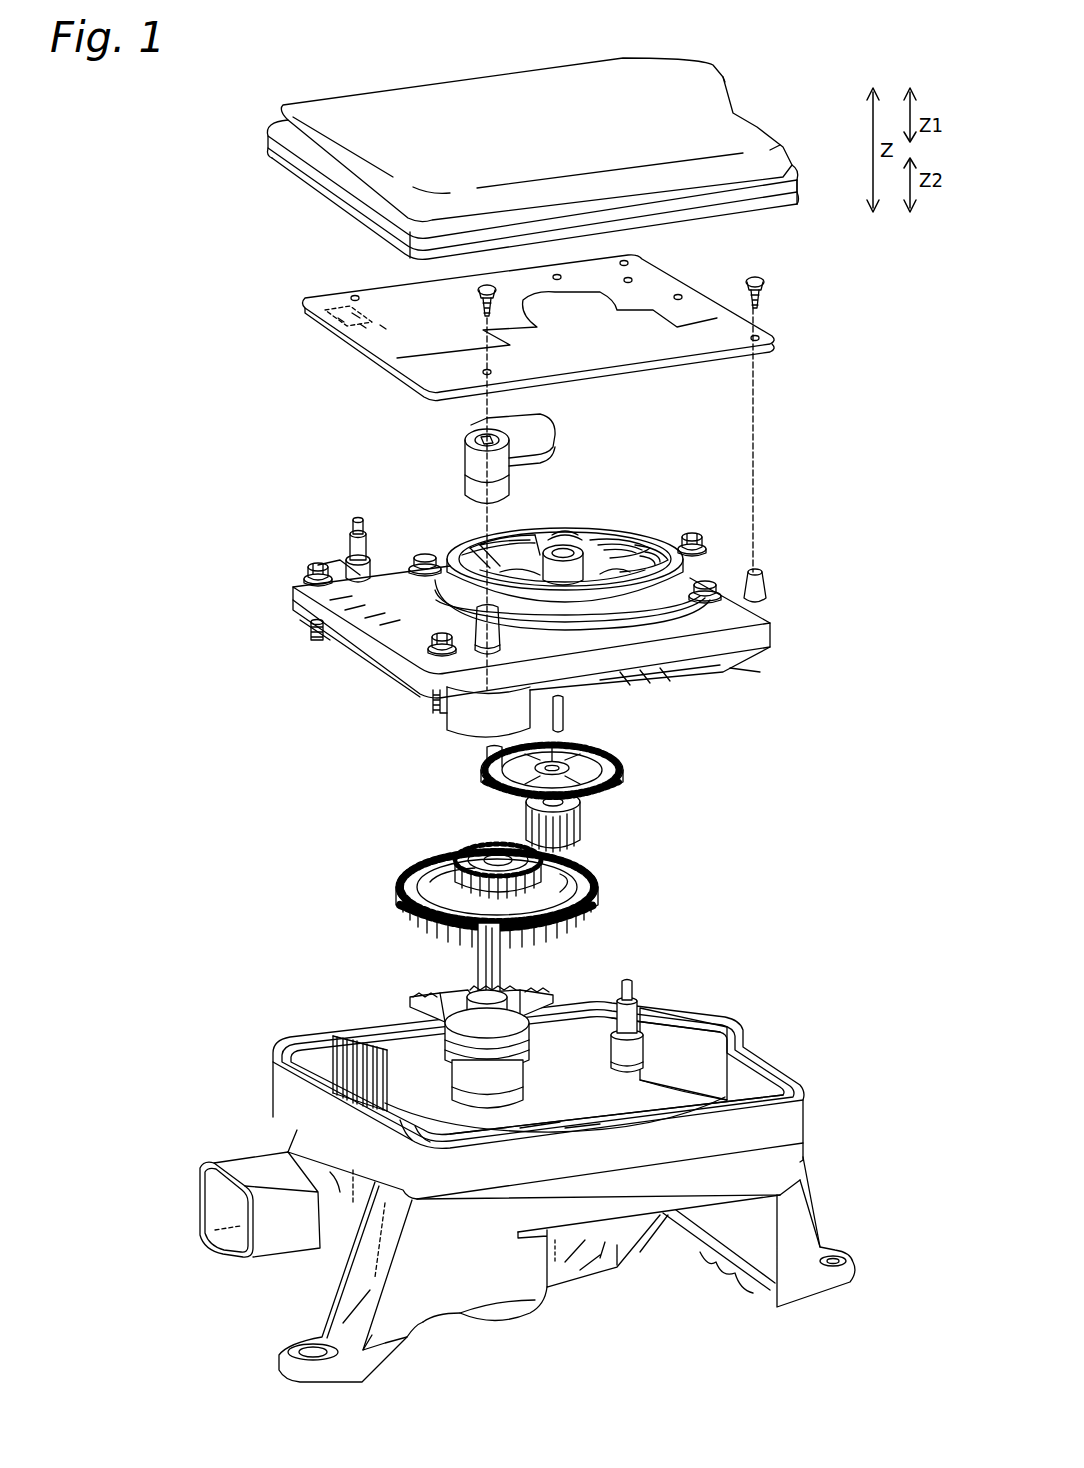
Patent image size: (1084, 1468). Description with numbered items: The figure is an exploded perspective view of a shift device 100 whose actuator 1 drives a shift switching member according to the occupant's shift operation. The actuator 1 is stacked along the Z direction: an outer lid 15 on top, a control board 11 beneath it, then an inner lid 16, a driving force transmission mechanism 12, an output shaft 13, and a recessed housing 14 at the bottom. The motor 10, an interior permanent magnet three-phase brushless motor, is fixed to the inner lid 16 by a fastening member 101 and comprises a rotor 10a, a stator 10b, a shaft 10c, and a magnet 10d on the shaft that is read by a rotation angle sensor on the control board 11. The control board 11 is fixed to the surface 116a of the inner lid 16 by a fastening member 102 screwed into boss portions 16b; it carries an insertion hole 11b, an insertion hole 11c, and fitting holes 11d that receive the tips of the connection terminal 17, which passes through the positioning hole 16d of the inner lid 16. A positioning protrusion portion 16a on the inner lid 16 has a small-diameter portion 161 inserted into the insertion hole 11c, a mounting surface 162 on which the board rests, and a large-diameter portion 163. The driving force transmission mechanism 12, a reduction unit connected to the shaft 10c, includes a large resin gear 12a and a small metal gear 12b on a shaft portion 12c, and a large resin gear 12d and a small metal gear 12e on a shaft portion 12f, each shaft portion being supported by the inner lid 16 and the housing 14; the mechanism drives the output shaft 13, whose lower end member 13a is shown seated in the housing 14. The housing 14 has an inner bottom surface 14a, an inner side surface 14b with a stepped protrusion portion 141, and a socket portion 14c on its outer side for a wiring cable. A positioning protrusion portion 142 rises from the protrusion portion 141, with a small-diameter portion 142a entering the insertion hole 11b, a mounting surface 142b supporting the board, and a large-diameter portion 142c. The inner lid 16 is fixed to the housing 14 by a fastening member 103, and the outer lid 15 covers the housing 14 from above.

The shift device 100 is at (125, 135).
The actuator 1 is at (252, 556).
The outer lid 15 is at (283, 110).
The control board 11 is at (318, 280).
The insertion hole 11b is at (630, 262).
The insertion hole 11c is at (357, 296).
The fitting holes 11d is at (318, 315).
The fastening member 102 is at (487, 284).
The fastening member 103 is at (302, 568).
The fastening member 101 is at (424, 552).
The motor 10 is at (478, 530).
The rotor 10a is at (612, 542).
The stator 10b is at (642, 548).
The shaft 10c is at (545, 546).
The magnet 10d is at (566, 535).
The inner lid 16 is at (370, 668).
The positioning protrusion portion 16a is at (372, 517).
The boss portions 16b is at (770, 590).
The positioning hole 16d is at (308, 604).
The small-diameter portion 161 is at (352, 522).
The mounting surface 162 is at (352, 538).
The large-diameter portion 163 is at (354, 557).
The surface 116a is at (392, 632).
The driving force transmission mechanism 12 is at (436, 804).
The gear 12a is at (622, 774).
The gear 12b is at (588, 818).
The shaft portion 12c is at (566, 718).
The gear 12d is at (400, 884).
The gear 12e is at (462, 848).
The shaft portion 12f is at (484, 756).
The output shaft 13 is at (466, 958).
The output member 13a is at (415, 998).
The housing 14 is at (256, 1068).
The inner bottom surface 14a is at (497, 1133).
The inner side surface 14b is at (700, 1036).
The socket portion 14c is at (222, 1160).
The protrusion portion 141 is at (716, 1092).
The positioning protrusion portion 142 is at (645, 1000).
The small-diameter portion 142a is at (622, 985).
The mounting surface 142b is at (612, 998).
The large-diameter portion 142c is at (610, 1052).
The connection terminal 17 is at (340, 1034).